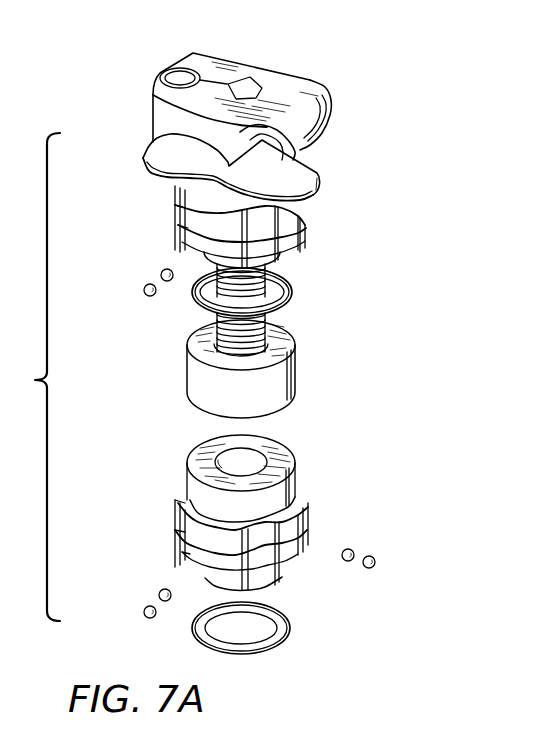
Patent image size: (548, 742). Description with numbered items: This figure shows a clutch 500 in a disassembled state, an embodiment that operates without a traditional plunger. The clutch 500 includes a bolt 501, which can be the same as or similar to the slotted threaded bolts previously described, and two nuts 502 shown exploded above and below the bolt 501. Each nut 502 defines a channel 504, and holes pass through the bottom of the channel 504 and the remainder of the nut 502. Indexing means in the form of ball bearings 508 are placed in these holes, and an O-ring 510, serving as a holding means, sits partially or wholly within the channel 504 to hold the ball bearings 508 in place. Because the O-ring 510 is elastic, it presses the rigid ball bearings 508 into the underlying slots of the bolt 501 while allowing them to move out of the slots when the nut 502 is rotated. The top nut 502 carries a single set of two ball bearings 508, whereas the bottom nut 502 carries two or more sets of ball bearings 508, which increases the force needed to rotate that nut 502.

The clutch 500 is at (306, 66).
The bolt 501 is at (188, 378).
The nut 502 is at (178, 222).
The channel 504 is at (310, 231).
The ball bearings 508 is at (215, 232).
The O-ring 510 is at (290, 283).